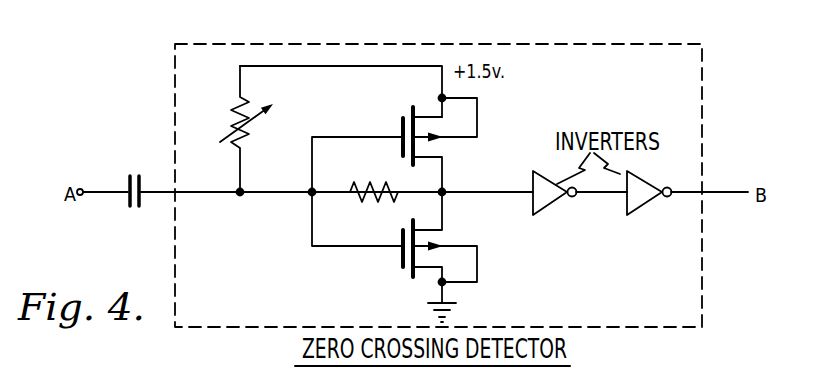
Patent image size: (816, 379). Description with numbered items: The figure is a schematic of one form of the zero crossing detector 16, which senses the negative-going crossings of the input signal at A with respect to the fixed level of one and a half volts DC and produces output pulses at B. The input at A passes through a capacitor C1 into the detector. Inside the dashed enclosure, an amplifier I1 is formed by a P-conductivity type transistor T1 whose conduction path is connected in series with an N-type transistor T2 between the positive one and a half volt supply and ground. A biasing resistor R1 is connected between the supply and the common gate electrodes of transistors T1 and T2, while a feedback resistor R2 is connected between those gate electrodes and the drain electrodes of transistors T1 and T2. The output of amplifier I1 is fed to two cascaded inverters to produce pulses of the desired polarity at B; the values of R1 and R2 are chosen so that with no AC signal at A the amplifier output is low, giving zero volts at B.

The zero crossing detector 16 is at (562, 41).
The coupling capacitor C1 is at (134, 172).
The biasing resistor R1 is at (240, 129).
The feedback resistor R2 is at (382, 178).
The amplifier I1 is at (405, 108).
The P-conductivity type transistor T1 is at (420, 143).
The N-type transistor T2 is at (430, 238).